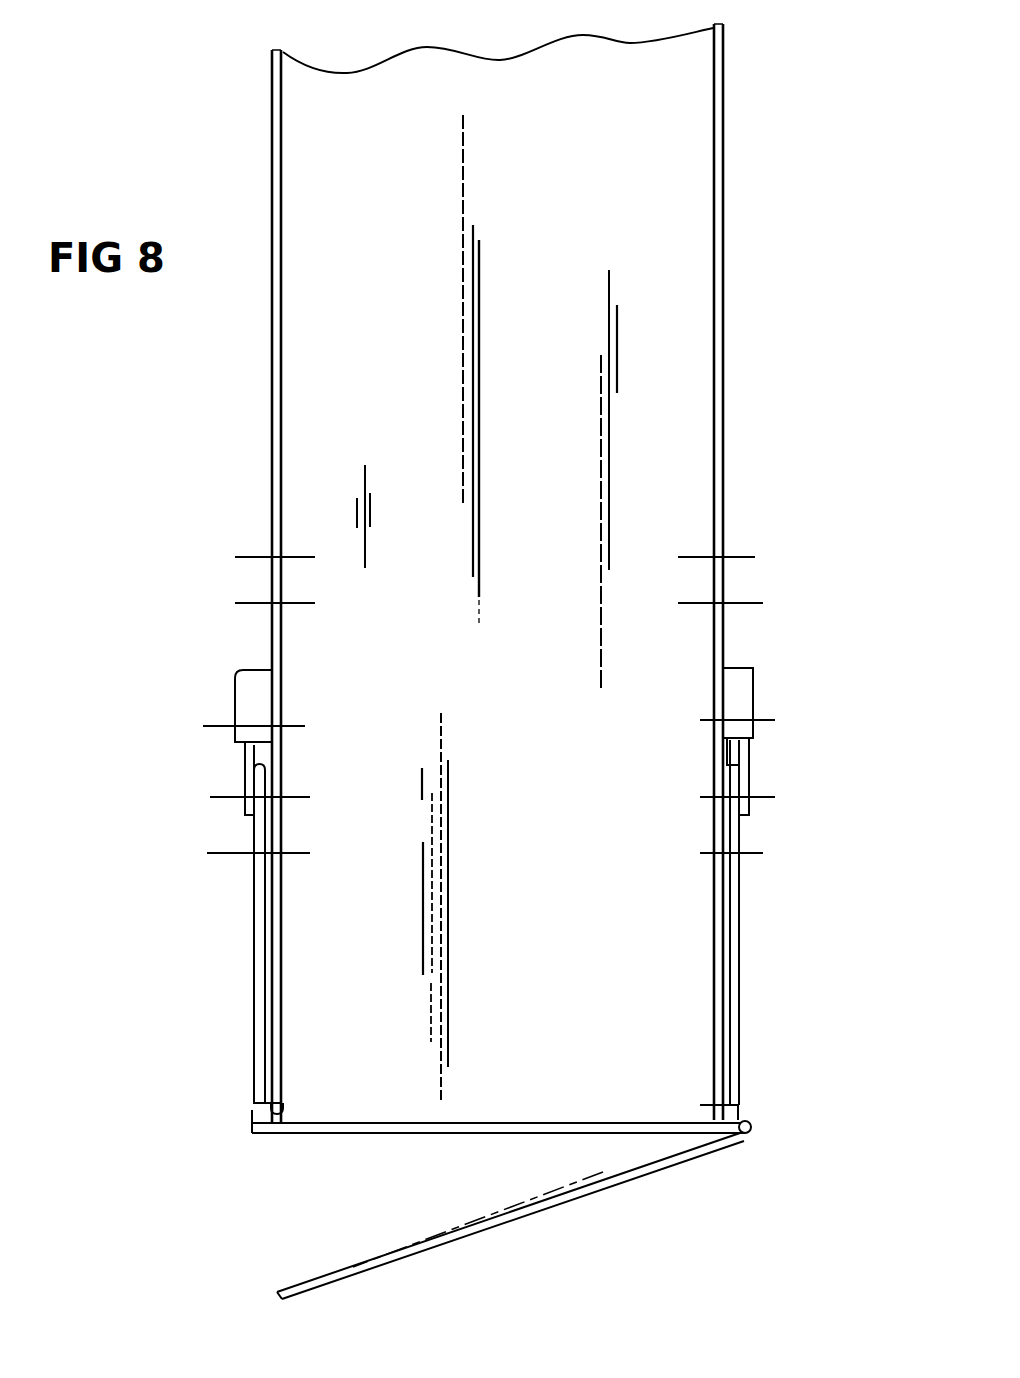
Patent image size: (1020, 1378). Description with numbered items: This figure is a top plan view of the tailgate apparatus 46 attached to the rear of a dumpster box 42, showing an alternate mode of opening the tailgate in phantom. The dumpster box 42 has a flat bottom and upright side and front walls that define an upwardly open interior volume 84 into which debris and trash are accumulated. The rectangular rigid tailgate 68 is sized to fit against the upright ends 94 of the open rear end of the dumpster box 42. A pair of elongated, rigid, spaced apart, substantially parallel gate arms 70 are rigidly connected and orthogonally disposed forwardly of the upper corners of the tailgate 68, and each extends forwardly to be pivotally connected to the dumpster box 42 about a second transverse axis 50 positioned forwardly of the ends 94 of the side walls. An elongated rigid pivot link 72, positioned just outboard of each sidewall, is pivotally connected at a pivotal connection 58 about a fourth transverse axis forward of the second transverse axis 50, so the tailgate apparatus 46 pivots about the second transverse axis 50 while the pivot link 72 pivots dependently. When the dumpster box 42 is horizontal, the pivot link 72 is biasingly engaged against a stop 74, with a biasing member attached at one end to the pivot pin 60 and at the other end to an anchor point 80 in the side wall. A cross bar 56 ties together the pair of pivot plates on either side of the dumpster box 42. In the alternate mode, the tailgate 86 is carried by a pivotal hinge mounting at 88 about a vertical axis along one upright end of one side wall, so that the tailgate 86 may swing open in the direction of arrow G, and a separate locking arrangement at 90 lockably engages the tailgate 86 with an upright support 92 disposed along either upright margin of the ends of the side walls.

The dumpster box 42 is at (724, 415).
The interior volume 84 is at (647, 565).
The anchor point 80 is at (737, 556).
The cross bar 56 is at (738, 603).
The stop 74 is at (748, 695).
The pivot link 72 is at (748, 757).
The pivotal connection 58 is at (757, 795).
The second transverse axis 50 is at (750, 850).
The pivot pin 60 is at (222, 725).
The gate arms 70 is at (257, 948).
The tailgate apparatus 46 is at (555, 1132).
The pivotal hinge mounting 88 is at (752, 1125).
The tailgate 68 is at (738, 1117).
The tailgate 86 is at (448, 1134).
The upright support 92 is at (252, 1117).
The locking arrangement 90 is at (252, 1123).
The upright ends 94 is at (318, 1074).